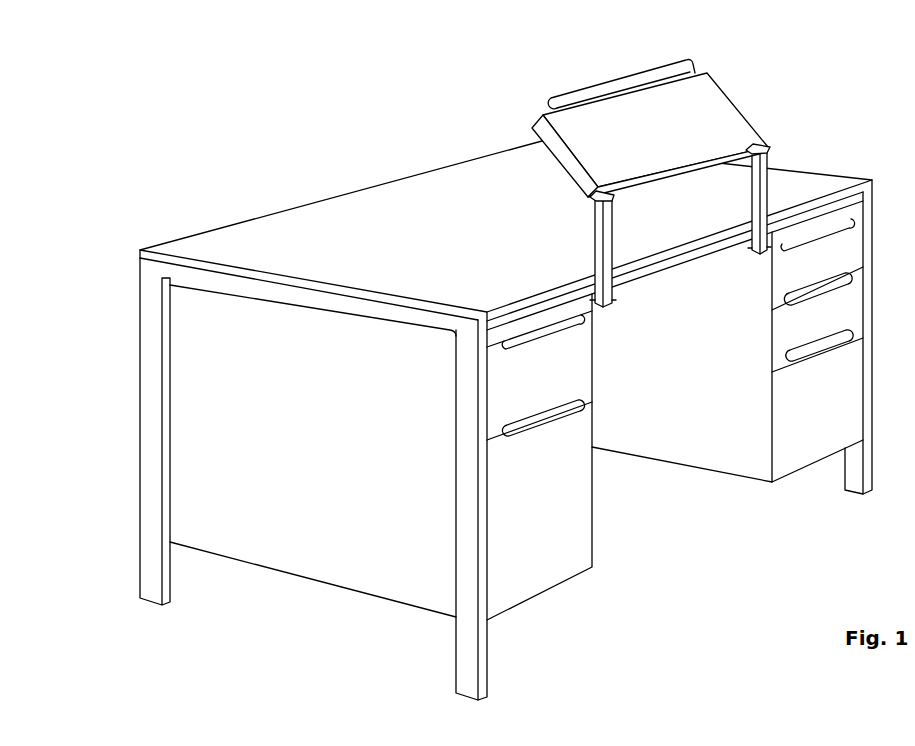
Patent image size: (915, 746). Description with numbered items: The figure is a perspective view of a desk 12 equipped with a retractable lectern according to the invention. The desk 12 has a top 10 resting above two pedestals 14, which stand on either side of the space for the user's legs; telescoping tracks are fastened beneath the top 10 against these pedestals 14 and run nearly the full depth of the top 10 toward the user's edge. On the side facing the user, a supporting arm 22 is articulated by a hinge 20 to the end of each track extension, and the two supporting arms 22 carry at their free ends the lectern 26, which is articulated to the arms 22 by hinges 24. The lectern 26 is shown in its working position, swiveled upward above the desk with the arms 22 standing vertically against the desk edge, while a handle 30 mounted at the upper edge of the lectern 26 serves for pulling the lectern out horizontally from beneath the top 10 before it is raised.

The top 10 is at (421, 244).
The desk 12 is at (247, 200).
The pedestals 14 is at (212, 372).
The hinge 20 is at (621, 292).
The supporting arm 22 is at (600, 242).
The hinges 24 is at (780, 147).
The lectern 26 is at (710, 105).
The handle 30 is at (580, 97).